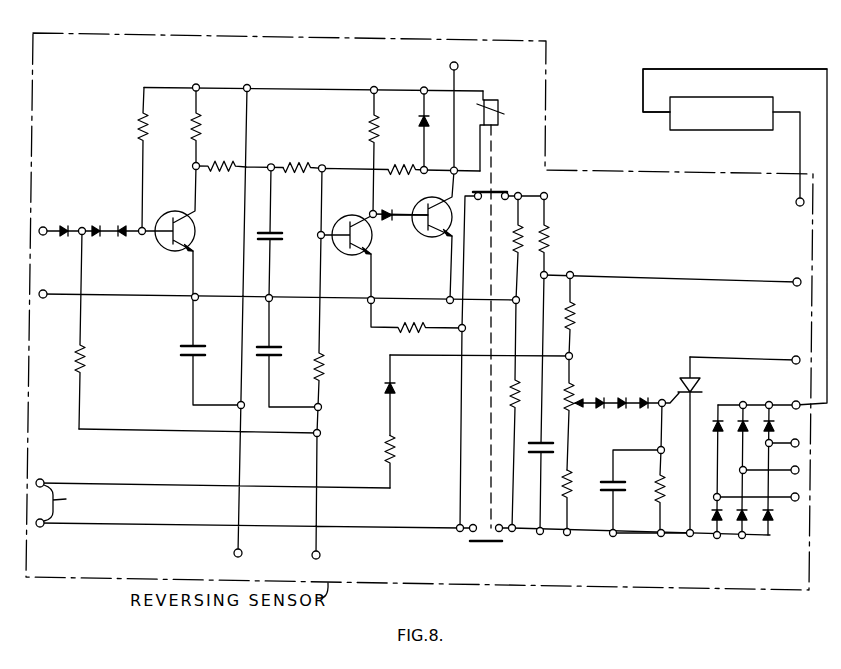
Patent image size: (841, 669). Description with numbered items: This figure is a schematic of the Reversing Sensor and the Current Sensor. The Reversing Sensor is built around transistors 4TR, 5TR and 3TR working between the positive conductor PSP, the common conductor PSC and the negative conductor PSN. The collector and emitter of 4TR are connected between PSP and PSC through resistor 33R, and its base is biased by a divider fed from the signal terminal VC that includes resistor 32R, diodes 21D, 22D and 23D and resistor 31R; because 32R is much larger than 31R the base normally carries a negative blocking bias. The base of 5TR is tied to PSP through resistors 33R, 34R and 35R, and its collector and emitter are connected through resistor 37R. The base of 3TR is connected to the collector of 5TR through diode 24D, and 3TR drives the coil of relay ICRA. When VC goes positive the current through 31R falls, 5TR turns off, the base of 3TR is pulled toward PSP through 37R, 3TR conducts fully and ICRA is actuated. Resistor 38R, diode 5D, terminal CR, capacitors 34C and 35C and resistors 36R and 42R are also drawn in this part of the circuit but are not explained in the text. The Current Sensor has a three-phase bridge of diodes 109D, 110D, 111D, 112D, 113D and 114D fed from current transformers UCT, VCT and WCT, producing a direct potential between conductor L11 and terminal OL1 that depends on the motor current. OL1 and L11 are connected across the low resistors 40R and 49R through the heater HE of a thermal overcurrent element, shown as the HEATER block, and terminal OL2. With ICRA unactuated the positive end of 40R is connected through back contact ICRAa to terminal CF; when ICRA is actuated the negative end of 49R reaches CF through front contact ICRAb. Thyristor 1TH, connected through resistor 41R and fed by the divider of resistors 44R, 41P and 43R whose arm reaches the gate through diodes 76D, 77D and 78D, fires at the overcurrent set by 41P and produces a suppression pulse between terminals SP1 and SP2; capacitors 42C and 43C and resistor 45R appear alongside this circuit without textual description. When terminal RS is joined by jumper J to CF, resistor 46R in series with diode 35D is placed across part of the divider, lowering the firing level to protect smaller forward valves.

The resistor 32R is at (138, 124).
The resistor 33R is at (190, 120).
The resistor 34R is at (220, 160).
The resistor 35R is at (295, 163).
The resistor 37R is at (370, 128).
The resistor 38R is at (399, 164).
The diode 5D is at (421, 117).
The resistor 31R is at (84, 354).
The resistor 36R is at (324, 357).
The resistor 42R is at (410, 322).
The resistor 46R is at (396, 436).
The diode 35D is at (395, 383).
The low resistor 49R is at (511, 394).
The resistor 41R is at (523, 238).
The low resistor 40R is at (548, 258).
The resistor 44R is at (574, 305).
The variable resistor 41P is at (572, 386).
The resistor 43R is at (570, 495).
The resistor 45R is at (657, 475).
The capacitor 34C is at (180, 350).
The capacitor 35C is at (283, 354).
The capacitor 42C is at (567, 446).
The capacitor 43C is at (626, 490).
The diode 21D is at (68, 237).
The diode 22D is at (95, 226).
The diode 23D is at (114, 237).
The diode 24D is at (391, 222).
The diode 76D is at (600, 398).
The diode 77D is at (625, 408).
The diode 78D is at (644, 398).
The thyristor 1TH is at (679, 442).
The diode 109D is at (713, 400).
The diode 111D is at (742, 410).
The diode 113D is at (762, 398).
The diode 110D is at (713, 528).
The diode 112D is at (733, 540).
The diode 114D is at (773, 528).
The transistor 4TR is at (193, 230).
The transistor 5TR is at (347, 257).
The transistor 3TR is at (430, 198).
The relay ICRA is at (500, 108).
The back contact ICRAa is at (503, 191).
The front contact ICRAb is at (470, 542).
The heater HEATER is at (721, 113).
The heater HE is at (670, 128).
The conductor L11 is at (621, 536).
The jumper J is at (59, 503).
The terminal VC is at (48, 216).
The common conductor PSC is at (44, 298).
The reversing sensor terminal RS is at (42, 479).
The terminal CF is at (42, 527).
The positive conductor PSP is at (250, 87).
The negative conductor PSN is at (320, 556).
The terminal CR is at (458, 66).
The terminal OL2 is at (797, 206).
The suppression terminal SP1 is at (797, 278).
The suppression terminal SP2 is at (797, 356).
The terminal OL1 is at (795, 401).
The current transformer UCT is at (797, 439).
The current transformer VCT is at (797, 466).
The current transformer WCT is at (797, 493).